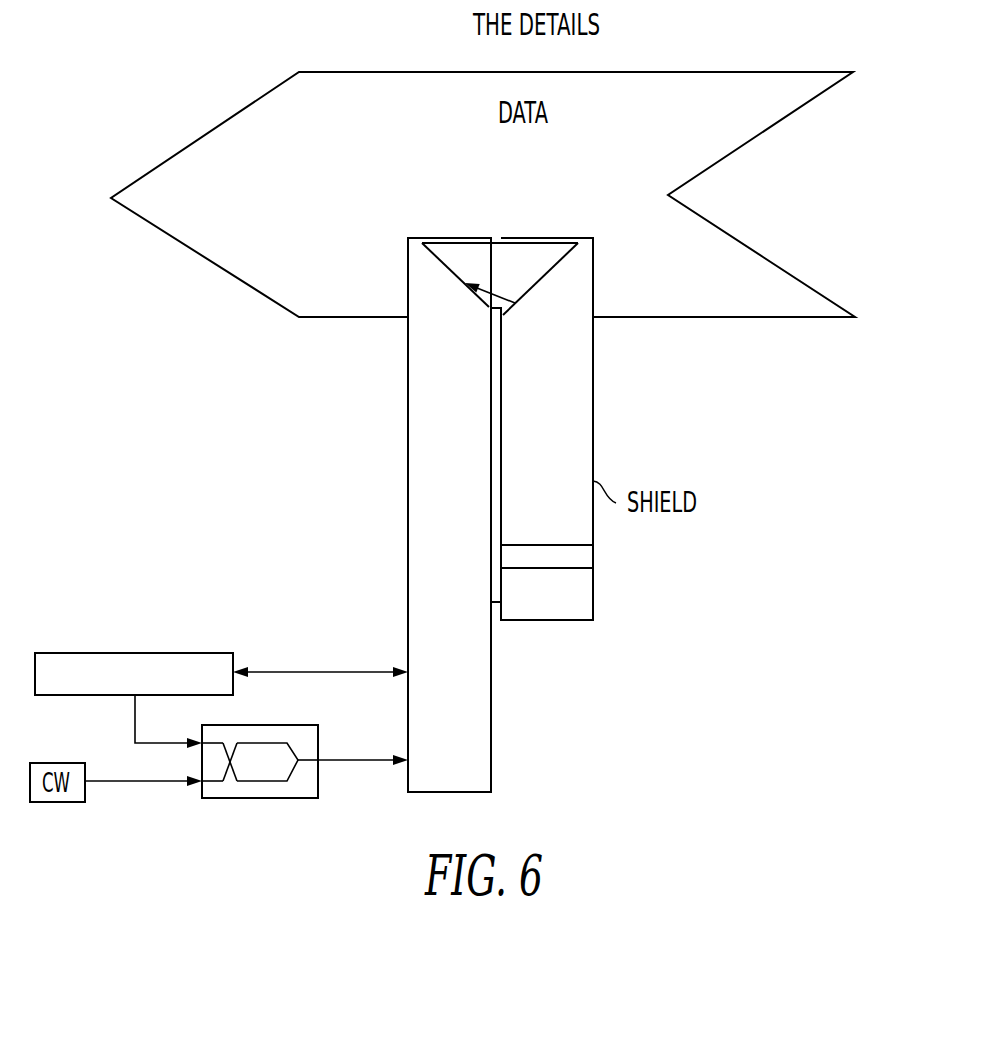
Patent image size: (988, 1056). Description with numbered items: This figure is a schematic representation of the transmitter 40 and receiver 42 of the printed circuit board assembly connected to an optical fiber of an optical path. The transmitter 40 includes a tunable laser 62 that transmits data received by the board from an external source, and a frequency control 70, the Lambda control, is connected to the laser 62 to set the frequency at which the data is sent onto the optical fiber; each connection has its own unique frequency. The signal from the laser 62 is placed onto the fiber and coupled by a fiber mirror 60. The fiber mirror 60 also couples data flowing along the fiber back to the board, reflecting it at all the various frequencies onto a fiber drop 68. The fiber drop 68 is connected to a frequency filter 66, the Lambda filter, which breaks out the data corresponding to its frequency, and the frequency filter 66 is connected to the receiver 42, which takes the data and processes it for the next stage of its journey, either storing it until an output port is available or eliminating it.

The transmitter 40 is at (282, 842).
The receiver 42 is at (593, 602).
The fiber mirror 60 is at (448, 283).
The laser 62 is at (492, 705).
The frequency filter 66 is at (593, 557).
The fiber drop 68 is at (408, 455).
The frequency control 70 is at (180, 652).